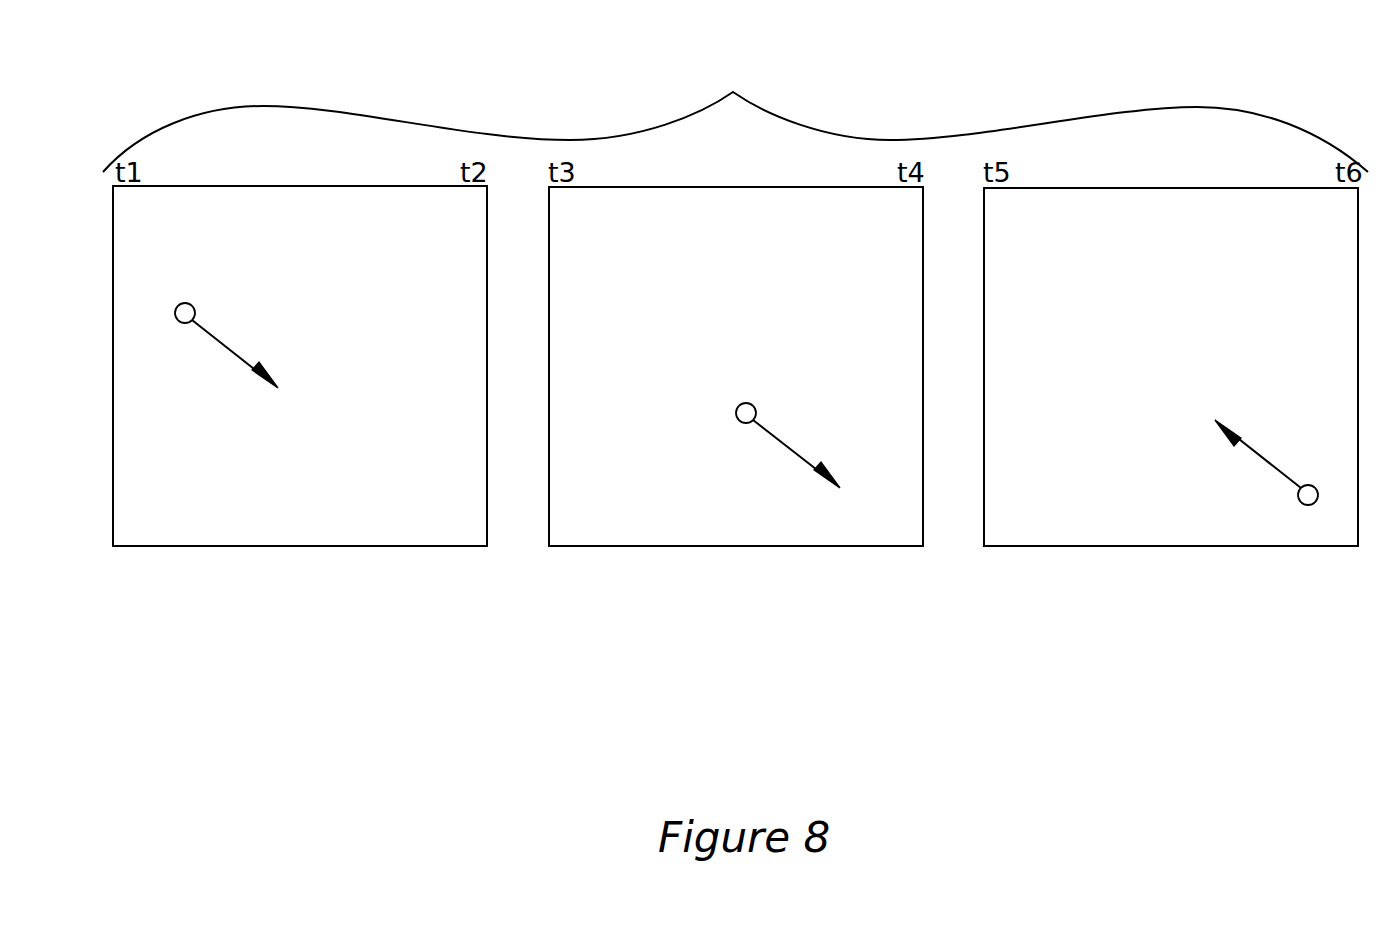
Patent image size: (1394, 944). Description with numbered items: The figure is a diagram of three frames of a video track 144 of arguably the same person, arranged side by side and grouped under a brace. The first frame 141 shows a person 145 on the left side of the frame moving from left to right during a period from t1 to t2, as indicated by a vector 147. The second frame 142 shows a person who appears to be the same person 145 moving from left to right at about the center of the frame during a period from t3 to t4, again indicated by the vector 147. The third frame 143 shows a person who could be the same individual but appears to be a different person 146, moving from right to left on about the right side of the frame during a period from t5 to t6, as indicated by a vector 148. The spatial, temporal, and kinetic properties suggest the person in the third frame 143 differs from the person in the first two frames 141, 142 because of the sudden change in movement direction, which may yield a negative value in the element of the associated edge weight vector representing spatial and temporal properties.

The frame 141 is at (300, 186).
The frame 142 is at (736, 187).
The frame 143 is at (1172, 188).
The video track 144 is at (733, 92).
The person 145 is at (193, 303).
The person 146 is at (1298, 505).
The vector 147 is at (236, 356).
The vector 148 is at (1255, 452).